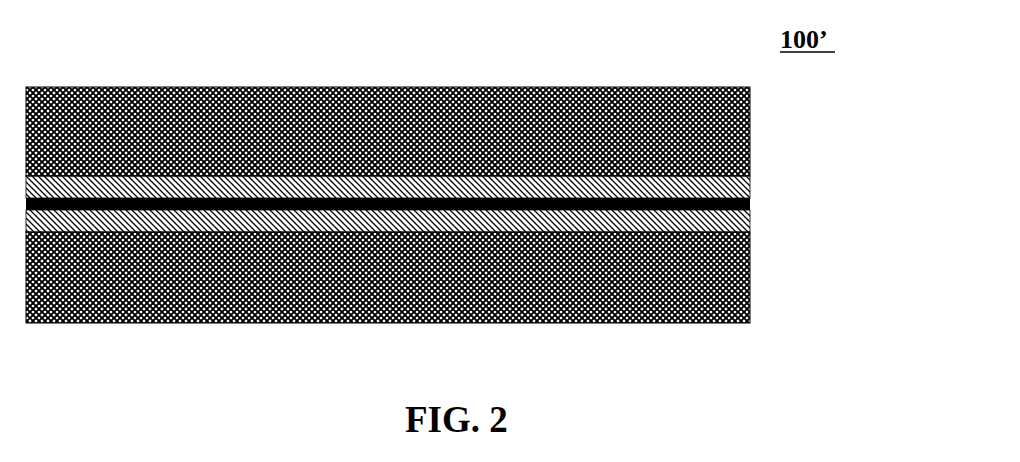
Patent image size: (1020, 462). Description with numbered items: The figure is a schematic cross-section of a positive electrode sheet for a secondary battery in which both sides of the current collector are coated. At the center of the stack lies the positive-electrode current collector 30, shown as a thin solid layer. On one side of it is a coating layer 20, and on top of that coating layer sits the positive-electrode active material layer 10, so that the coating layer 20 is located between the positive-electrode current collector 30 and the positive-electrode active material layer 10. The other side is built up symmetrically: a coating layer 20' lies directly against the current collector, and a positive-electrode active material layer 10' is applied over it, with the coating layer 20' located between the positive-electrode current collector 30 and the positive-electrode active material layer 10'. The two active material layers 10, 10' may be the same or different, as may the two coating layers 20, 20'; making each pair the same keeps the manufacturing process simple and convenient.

The positive-electrode active material layer 10 is at (459, 131).
The coating layer 20 is at (459, 175).
The positive-electrode current collector 30 is at (751, 203).
The coating layer 20' is at (462, 229).
The positive-electrode active material layer 10' is at (462, 277).